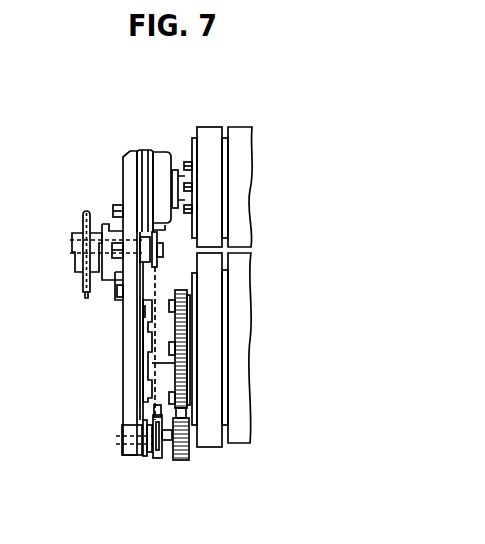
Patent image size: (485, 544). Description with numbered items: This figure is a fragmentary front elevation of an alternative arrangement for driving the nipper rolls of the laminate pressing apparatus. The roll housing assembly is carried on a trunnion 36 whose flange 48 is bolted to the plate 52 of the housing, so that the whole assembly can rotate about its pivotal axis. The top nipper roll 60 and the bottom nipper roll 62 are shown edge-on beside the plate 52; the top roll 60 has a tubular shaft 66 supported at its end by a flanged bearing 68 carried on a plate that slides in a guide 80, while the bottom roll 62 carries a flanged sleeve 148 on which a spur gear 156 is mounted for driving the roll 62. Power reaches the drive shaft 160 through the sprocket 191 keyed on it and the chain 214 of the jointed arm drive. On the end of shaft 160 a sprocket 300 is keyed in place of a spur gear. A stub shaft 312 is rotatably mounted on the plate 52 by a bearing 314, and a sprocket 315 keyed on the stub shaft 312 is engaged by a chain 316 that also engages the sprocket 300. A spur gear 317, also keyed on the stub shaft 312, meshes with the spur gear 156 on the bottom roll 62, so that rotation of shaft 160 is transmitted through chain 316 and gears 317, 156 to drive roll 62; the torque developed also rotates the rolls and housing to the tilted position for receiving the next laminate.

The trunnion 36 is at (107, 282).
The flange 48 is at (122, 205).
The plate 52 is at (127, 381).
The nipper roll 60 is at (217, 124).
The nipper roll 62 is at (226, 458).
The tubular shaft 66 is at (177, 174).
The flanged bearing 68 is at (160, 157).
The guide 80 is at (139, 142).
The flanged sleeve 148 is at (148, 344).
The spur gear 156 is at (182, 373).
The drive shaft 160 is at (163, 247).
The sprocket 191 is at (85, 237).
The chain 214 is at (86, 297).
The sprocket 300 is at (158, 260).
The stub shaft 312 is at (150, 456).
The bearing 314 is at (142, 438).
The sprocket 315 is at (162, 458).
The chain 316 is at (157, 405).
The spur gear 317 is at (182, 462).